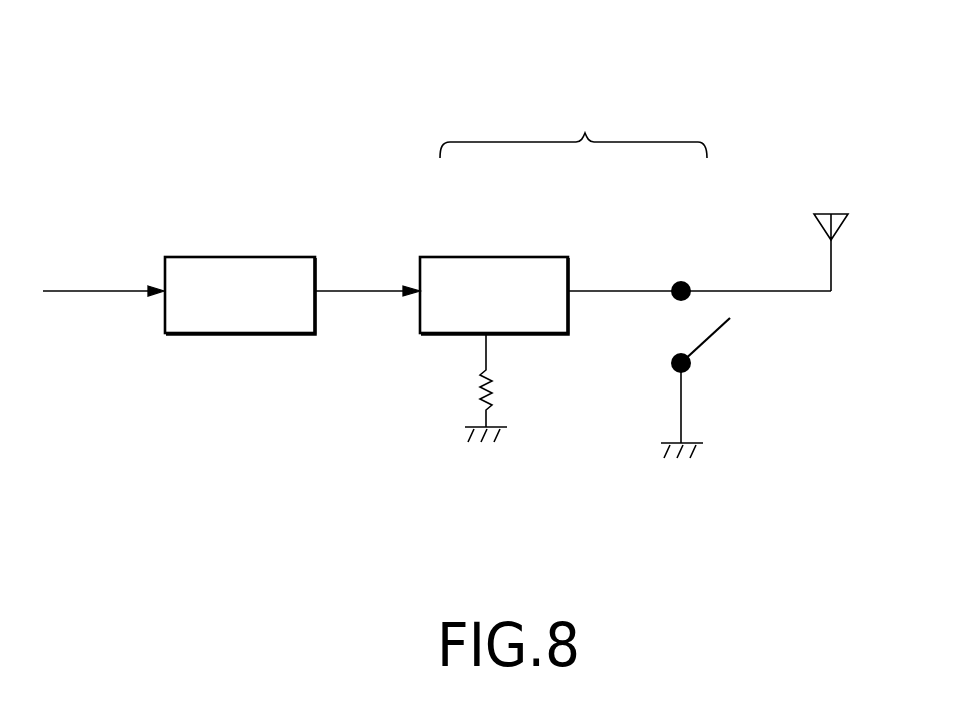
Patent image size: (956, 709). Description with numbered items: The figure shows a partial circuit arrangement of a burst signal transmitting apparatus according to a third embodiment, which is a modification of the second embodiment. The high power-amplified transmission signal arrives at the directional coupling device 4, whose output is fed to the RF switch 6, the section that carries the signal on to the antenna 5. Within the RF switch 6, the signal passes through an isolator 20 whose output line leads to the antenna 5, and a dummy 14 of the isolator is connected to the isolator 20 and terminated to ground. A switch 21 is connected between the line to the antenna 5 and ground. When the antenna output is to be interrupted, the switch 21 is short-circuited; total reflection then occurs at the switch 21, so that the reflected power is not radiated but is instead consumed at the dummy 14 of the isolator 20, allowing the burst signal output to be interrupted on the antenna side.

The directional coupling device 4 is at (248, 257).
The isolator 20 is at (496, 257).
The RF switch 6 is at (585, 133).
The antenna 5 is at (825, 213).
The dummy 14 is at (502, 388).
The switch 21 is at (705, 343).